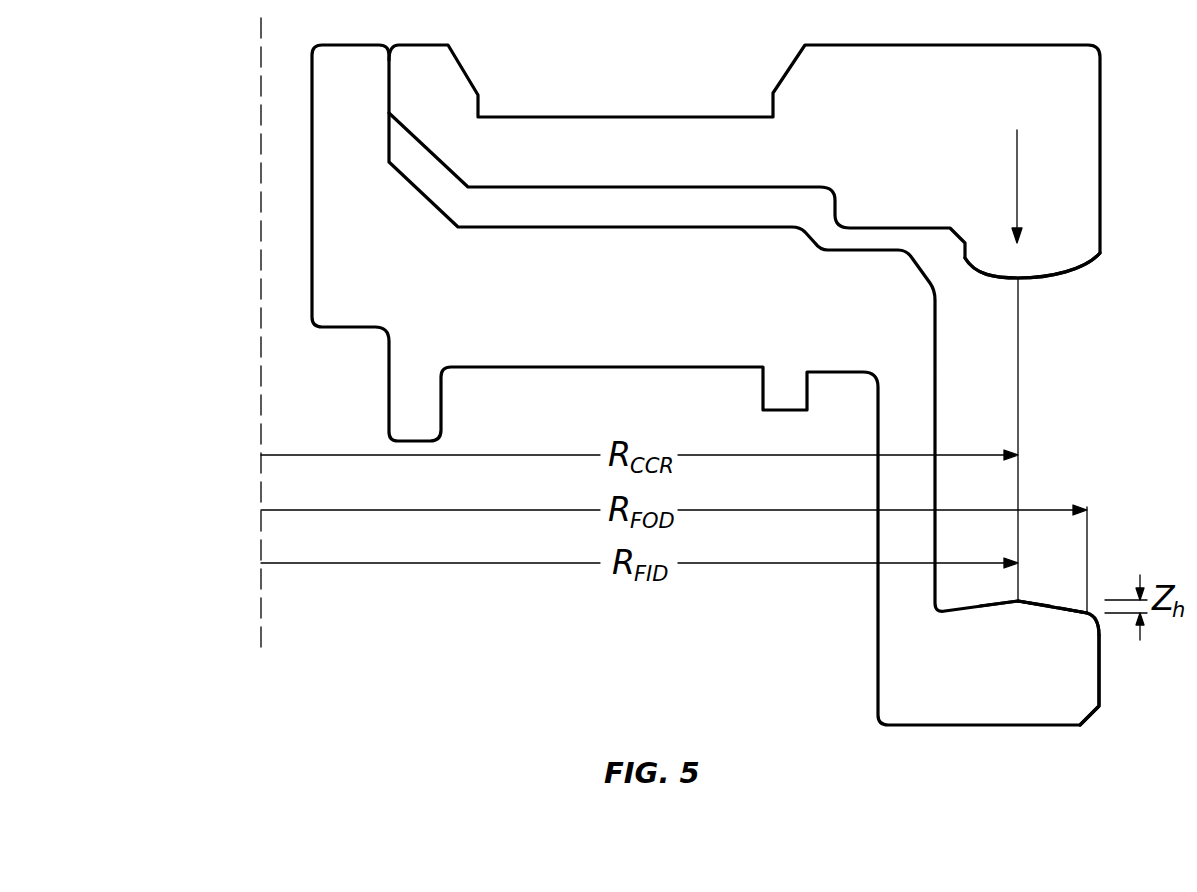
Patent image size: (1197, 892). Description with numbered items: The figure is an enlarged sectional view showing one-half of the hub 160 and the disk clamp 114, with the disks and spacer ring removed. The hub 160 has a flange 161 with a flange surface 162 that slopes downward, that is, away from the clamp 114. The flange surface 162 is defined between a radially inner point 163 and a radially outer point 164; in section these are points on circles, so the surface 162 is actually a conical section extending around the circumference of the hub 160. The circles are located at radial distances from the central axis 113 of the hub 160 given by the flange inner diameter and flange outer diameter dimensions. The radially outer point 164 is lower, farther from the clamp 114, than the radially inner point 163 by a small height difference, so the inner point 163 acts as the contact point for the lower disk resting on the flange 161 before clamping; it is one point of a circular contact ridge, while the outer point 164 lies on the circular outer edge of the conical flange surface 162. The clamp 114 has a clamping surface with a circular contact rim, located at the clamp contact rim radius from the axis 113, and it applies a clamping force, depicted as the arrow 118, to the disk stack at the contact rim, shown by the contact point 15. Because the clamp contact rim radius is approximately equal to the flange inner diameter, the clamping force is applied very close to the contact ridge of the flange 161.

The contact point 15 is at (1020, 279).
The central axis 113 is at (261, 600).
The disk clamp 114 is at (603, 143).
The arrow 118 is at (1019, 155).
The hub 160 is at (603, 253).
The flange 161 is at (1090, 690).
The flange surface 162 is at (1065, 613).
The radially inner point 163 is at (1020, 598).
The radially outer point 164 is at (1088, 610).